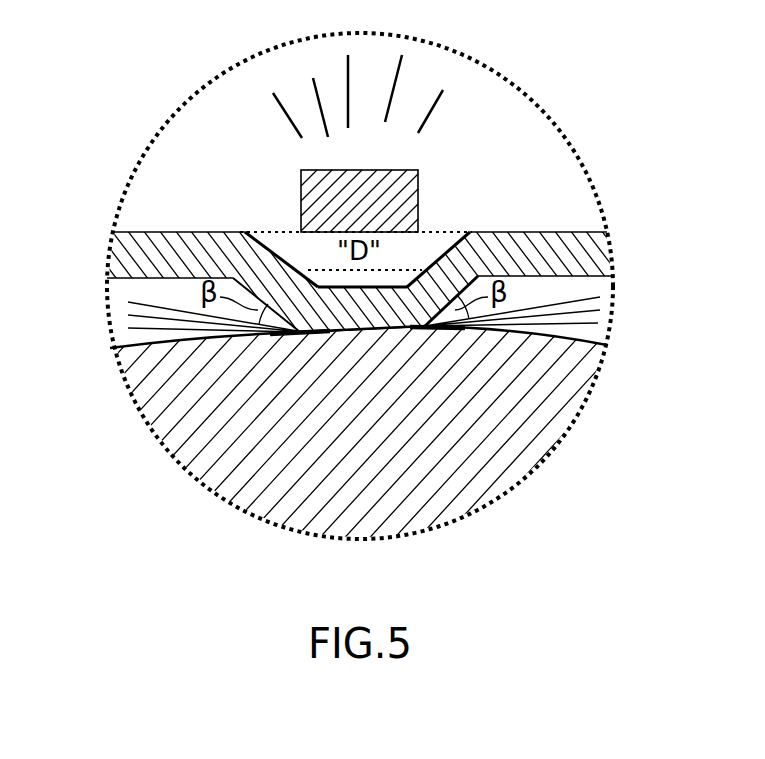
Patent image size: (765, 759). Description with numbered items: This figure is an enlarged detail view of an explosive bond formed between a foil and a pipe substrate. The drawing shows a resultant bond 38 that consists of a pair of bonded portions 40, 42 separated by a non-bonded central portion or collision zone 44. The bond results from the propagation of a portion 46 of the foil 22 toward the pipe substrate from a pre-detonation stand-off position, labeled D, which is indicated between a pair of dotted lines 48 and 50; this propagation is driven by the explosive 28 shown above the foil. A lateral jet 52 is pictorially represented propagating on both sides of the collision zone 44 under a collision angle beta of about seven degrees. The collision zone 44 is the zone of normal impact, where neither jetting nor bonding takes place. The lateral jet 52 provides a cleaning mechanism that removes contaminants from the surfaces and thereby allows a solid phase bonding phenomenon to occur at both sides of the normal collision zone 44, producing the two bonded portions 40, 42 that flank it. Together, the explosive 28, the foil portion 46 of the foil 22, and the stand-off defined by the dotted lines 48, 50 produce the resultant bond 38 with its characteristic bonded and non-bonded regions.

The foil 22 is at (608, 257).
The explosive 28 is at (373, 180).
The resultant bond 38 is at (383, 457).
The bonded portion 40 is at (419, 334).
The bonded portion 42 is at (293, 335).
The non-bonded central portion or collision zone 44 is at (370, 328).
The portion of foil 46 is at (403, 303).
The dotted line 48 is at (452, 232).
The dotted line 50 is at (308, 272).
The lateral jet 52 is at (130, 315).